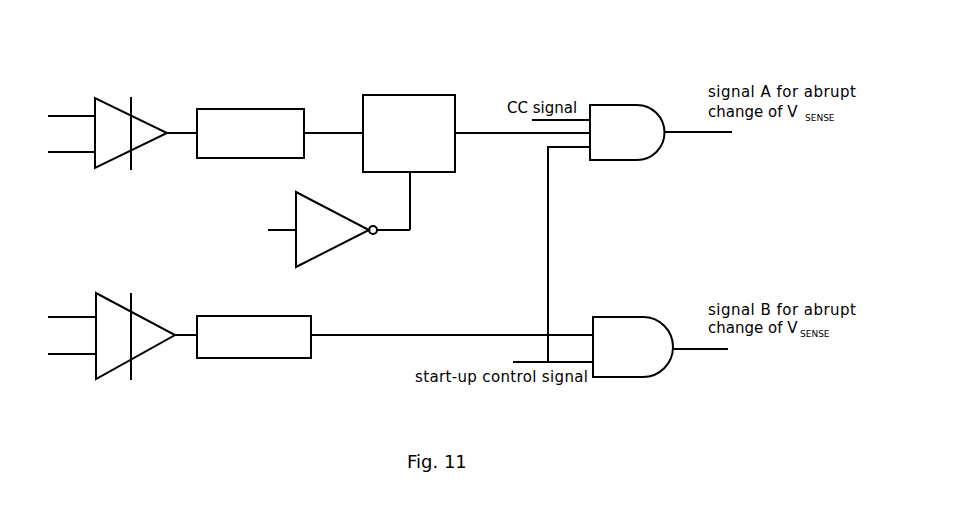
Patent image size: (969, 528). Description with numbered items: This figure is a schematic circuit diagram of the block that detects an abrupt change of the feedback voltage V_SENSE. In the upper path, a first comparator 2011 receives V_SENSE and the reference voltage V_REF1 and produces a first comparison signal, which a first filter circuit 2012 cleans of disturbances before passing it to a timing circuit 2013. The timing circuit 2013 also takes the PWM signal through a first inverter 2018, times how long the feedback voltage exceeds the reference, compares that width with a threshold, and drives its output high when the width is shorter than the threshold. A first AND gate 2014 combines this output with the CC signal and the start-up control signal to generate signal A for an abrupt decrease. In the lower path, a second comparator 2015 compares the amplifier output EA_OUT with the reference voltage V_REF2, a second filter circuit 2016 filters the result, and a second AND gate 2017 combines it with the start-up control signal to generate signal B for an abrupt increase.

The first comparator 2011 is at (123, 113).
The first filter circuit 2012 is at (280, 107).
The timing circuit 2013 is at (476, 145).
The first AND gate 2014 is at (661, 116).
The second comparator 2015 is at (126, 348).
The second filter circuit 2016 is at (395, 355).
The second AND gate 2017 is at (660, 367).
The first inverter 2018 is at (335, 240).